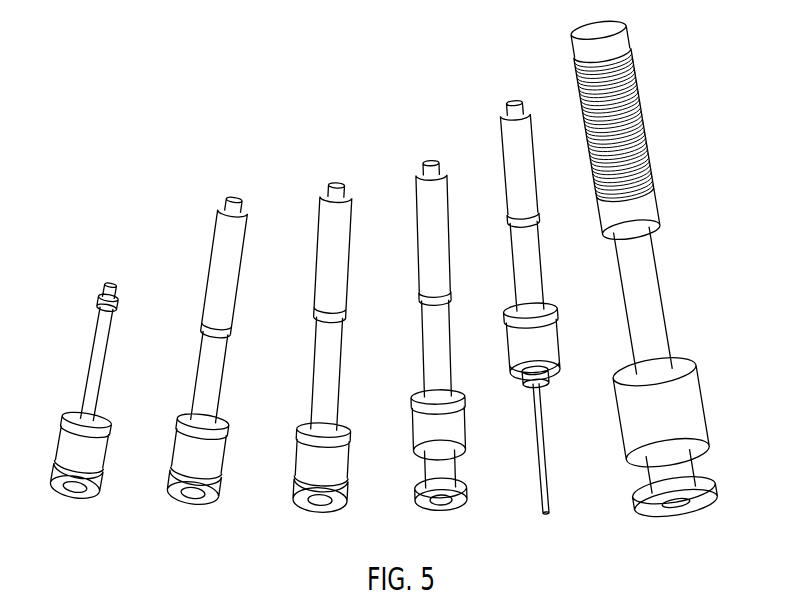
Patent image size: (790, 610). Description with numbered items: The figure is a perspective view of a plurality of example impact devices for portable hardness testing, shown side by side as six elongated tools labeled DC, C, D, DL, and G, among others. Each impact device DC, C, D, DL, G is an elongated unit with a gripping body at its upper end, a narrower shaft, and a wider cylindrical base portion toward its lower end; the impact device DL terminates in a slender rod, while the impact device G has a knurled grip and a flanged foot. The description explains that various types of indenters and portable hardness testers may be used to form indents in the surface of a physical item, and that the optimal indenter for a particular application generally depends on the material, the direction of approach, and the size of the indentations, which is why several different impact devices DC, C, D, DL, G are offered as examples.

The DC tool DC is at (83, 390).
The C tool C is at (207, 350).
The D tool D is at (321, 347).
The DL tool DL is at (519, 307).
The G tool G is at (644, 268).